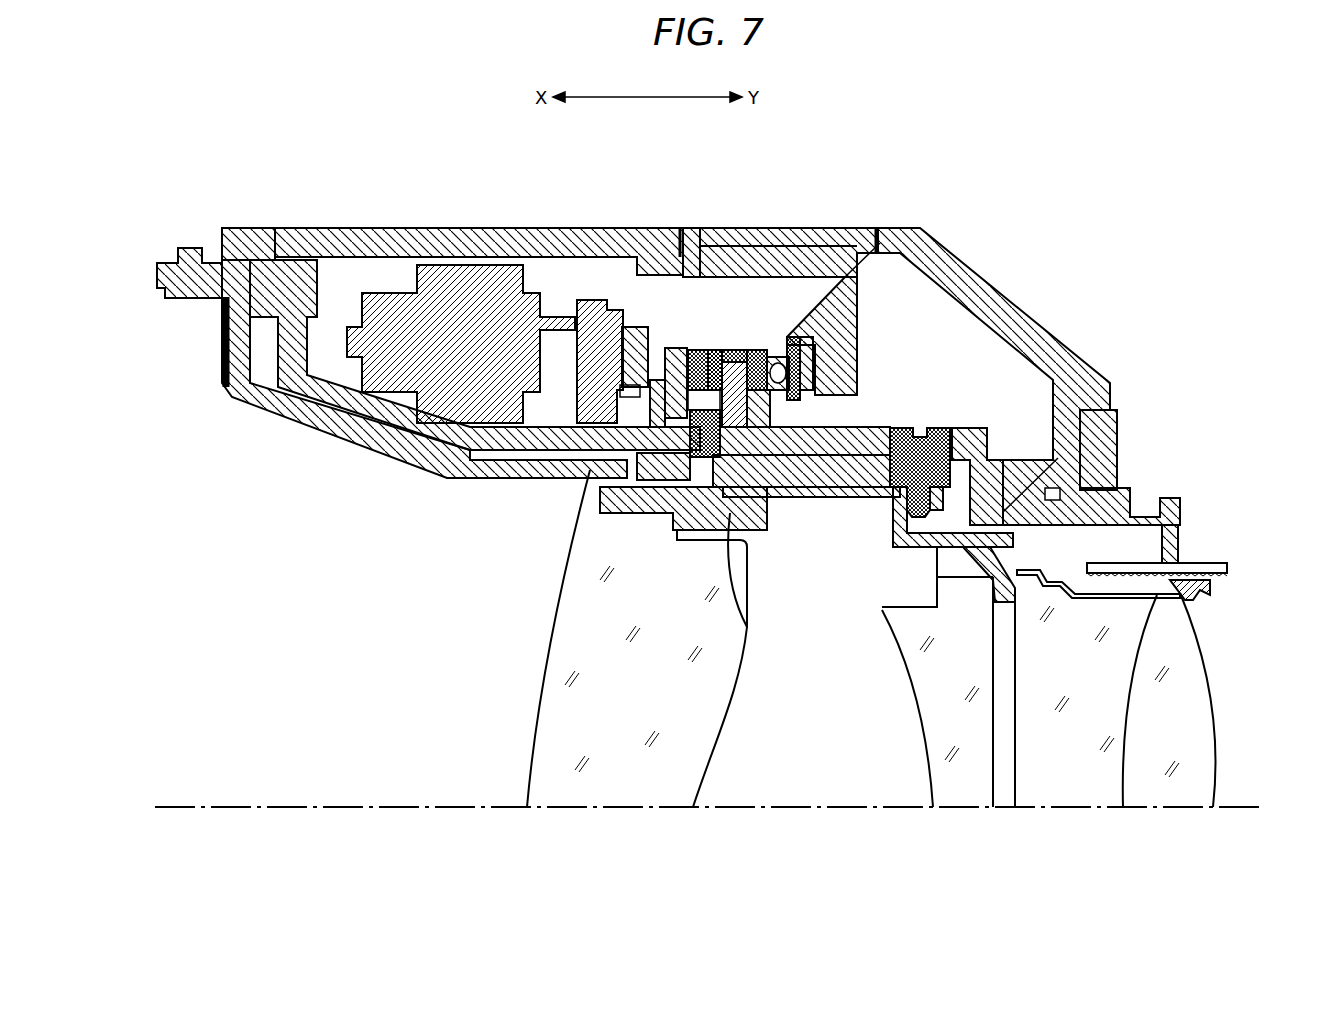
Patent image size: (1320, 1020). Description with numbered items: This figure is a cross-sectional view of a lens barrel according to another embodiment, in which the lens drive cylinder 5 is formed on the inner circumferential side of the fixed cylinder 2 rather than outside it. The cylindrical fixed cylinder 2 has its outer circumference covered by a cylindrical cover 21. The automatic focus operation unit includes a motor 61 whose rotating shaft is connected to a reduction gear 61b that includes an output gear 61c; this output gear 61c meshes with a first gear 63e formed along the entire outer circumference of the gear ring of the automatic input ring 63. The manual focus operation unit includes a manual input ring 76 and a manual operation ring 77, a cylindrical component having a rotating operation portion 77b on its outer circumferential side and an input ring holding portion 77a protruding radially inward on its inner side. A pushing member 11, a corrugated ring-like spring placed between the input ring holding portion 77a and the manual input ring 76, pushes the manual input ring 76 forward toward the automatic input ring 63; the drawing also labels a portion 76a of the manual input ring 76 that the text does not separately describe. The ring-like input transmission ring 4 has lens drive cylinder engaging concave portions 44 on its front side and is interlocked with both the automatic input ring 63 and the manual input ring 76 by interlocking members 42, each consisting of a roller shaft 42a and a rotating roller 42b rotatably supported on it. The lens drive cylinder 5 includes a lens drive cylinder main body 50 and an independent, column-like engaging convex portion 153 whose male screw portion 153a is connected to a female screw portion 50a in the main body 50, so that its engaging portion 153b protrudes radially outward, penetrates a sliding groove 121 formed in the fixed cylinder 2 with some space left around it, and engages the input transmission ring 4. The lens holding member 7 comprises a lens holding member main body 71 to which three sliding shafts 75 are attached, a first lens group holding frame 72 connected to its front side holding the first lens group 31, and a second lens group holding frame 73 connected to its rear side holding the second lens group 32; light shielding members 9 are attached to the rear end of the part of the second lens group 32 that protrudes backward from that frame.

The fixed cylinder 2 is at (463, 457).
The input transmission ring 4 is at (672, 348).
The lens drive cylinder 5 is at (745, 531).
The lens holding member 7 is at (873, 512).
The light shielding members 9 is at (1193, 600).
The pushing member 11 is at (817, 370).
The cover 21 is at (508, 230).
The first lens group 31 is at (573, 713).
The second lens group 32 is at (1180, 708).
The interlocking members 42 is at (778, 281).
The roller shaft 42a is at (712, 345).
The rotating roller 42b is at (752, 345).
The lens drive cylinder engaging concave portions 44 is at (690, 350).
The lens drive cylinder main body 50 is at (783, 490).
The female screw portion 50a is at (690, 525).
The motor 61 is at (472, 267).
The reduction gear 61b is at (587, 280).
The output gear 61c is at (625, 327).
The automatic input ring 63 is at (563, 470).
The first gear 63e is at (540, 430).
The lens holding member main body 71 is at (845, 497).
The first lens group holding frame 72 is at (747, 627).
The second lens group holding frame 73 is at (977, 573).
The sliding shafts 75 is at (930, 428).
The manual input ring 76 is at (862, 267).
The pin head 76a is at (817, 353).
The manual operation ring 77 is at (983, 330).
The input ring holding portion 77a is at (833, 367).
The rotating operation portion 77b is at (835, 230).
The sliding groove 121 is at (645, 465).
The engaging convex portion 153 is at (775, 500).
The male screw portion 153a is at (680, 513).
The engaging portion 153b is at (665, 513).